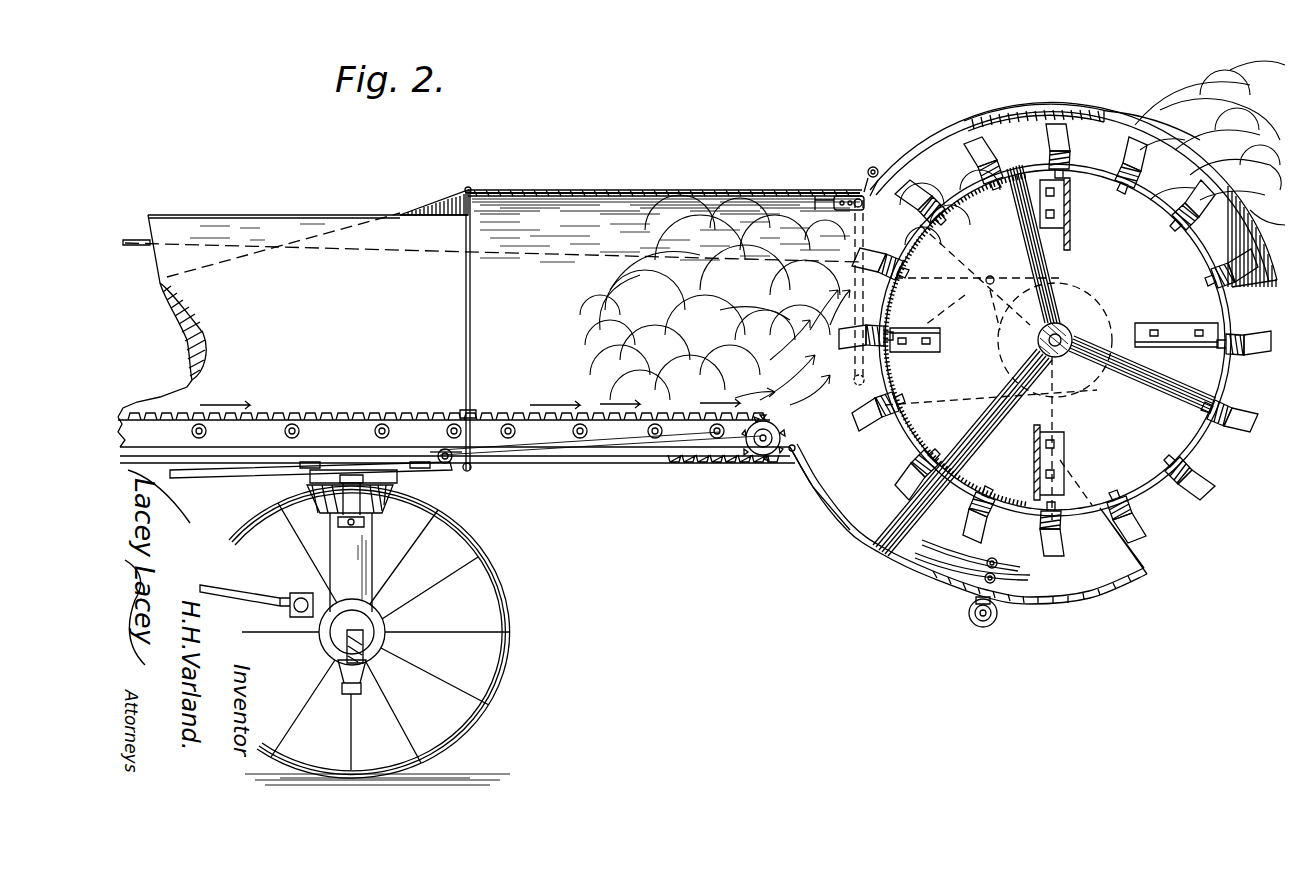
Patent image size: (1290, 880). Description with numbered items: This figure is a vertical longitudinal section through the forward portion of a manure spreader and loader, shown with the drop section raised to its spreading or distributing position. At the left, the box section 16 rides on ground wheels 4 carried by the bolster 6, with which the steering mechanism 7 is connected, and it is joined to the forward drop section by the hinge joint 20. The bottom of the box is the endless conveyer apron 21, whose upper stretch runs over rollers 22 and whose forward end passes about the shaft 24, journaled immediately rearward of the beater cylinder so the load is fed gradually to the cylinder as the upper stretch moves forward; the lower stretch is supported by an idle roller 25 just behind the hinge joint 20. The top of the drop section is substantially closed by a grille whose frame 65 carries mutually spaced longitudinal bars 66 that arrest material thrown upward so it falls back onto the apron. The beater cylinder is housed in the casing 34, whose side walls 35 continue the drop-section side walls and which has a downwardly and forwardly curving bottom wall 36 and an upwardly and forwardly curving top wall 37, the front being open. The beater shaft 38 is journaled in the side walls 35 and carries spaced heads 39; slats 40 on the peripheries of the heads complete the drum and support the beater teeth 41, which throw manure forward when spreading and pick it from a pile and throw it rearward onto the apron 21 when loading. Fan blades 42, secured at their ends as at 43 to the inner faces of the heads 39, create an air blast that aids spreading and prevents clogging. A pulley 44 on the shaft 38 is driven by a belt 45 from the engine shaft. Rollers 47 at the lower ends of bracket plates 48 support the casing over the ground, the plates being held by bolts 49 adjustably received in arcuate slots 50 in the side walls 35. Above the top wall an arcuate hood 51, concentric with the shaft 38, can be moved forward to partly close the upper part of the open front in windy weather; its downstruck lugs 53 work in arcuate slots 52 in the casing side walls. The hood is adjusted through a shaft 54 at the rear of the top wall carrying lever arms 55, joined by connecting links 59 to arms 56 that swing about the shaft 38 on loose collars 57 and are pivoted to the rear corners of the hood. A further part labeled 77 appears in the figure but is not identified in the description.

The ground wheels 4 is at (507, 620).
The bolster 6 is at (345, 606).
The steering mechanism 7 is at (256, 592).
The box section 16 is at (292, 216).
The hinge joint 20 is at (462, 462).
The conveyer apron 21 is at (640, 420).
The rollers 22 is at (652, 433).
The shaft 24 is at (770, 450).
The idle roller 25 is at (467, 470).
The casing 34 is at (838, 476).
The side walls 35 is at (905, 490).
The bottom wall 36 is at (868, 550).
The top wall 37 is at (870, 170).
The beater shaft 38 is at (1068, 330).
The heads 39 is at (1195, 372).
The slats 40 is at (1212, 465).
The beater teeth 41 is at (1208, 190).
The fan blades 42 is at (1072, 215).
The fan blade securement 43 is at (1019, 244).
The pulley 44 is at (1080, 380).
The belt 45 is at (930, 402).
The rollers 47 is at (997, 622).
The bracket plates 48 is at (980, 600).
The bolts 49 is at (995, 560).
The arcuate slots 50 is at (1032, 578).
The hood 51 is at (975, 127).
The arcuate slots 52 is at (1118, 118).
The downstruck ears or lugs 53 is at (1100, 108).
The shaft 54 is at (830, 200).
The lever arms 55 is at (915, 321).
The lever arms 56 is at (991, 277).
The collars 57 is at (1087, 340).
The connecting bars or links 59 is at (991, 347).
The frame 65 is at (472, 192).
The bars 66 is at (657, 193).
The rail top 77 is at (562, 193).